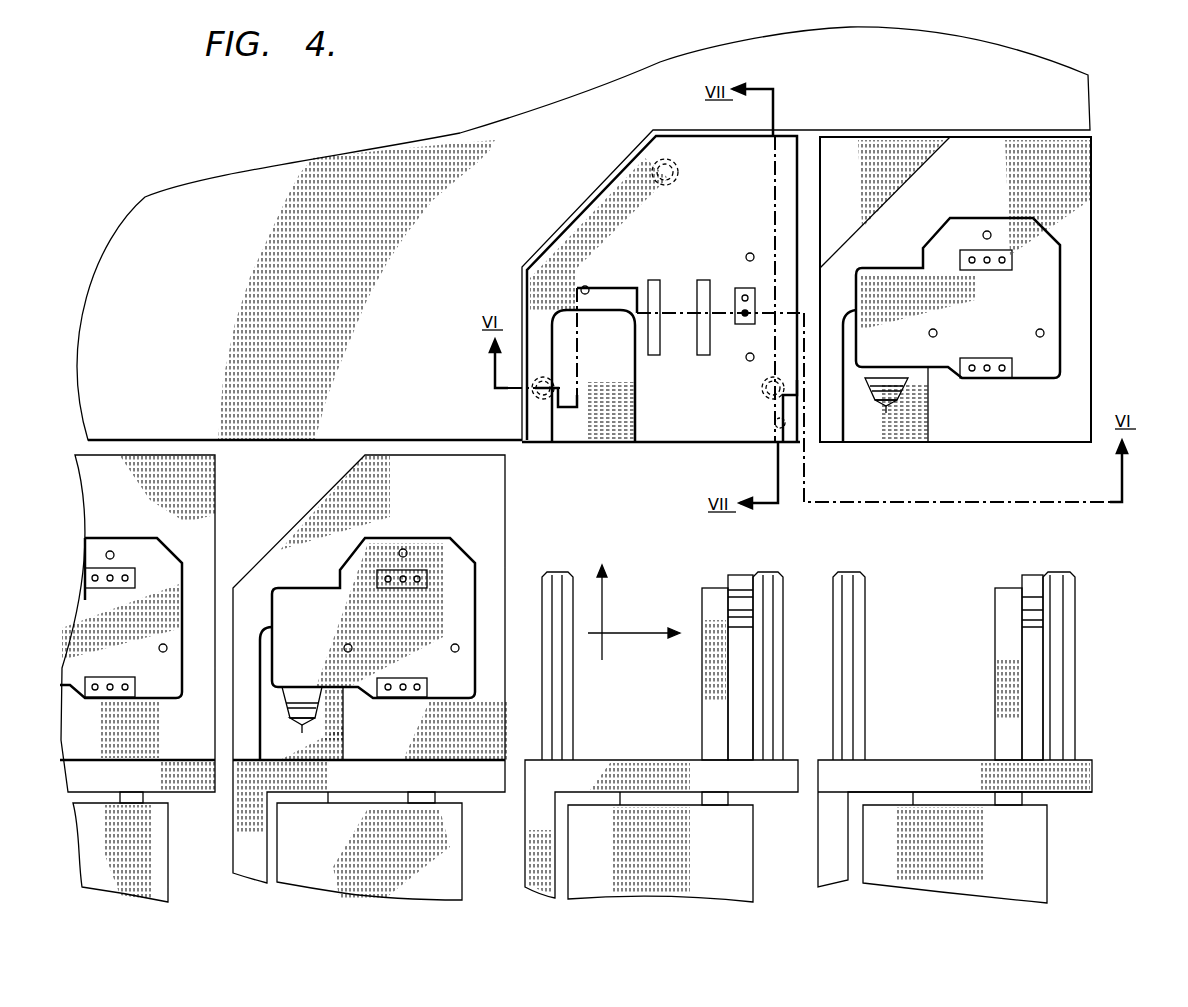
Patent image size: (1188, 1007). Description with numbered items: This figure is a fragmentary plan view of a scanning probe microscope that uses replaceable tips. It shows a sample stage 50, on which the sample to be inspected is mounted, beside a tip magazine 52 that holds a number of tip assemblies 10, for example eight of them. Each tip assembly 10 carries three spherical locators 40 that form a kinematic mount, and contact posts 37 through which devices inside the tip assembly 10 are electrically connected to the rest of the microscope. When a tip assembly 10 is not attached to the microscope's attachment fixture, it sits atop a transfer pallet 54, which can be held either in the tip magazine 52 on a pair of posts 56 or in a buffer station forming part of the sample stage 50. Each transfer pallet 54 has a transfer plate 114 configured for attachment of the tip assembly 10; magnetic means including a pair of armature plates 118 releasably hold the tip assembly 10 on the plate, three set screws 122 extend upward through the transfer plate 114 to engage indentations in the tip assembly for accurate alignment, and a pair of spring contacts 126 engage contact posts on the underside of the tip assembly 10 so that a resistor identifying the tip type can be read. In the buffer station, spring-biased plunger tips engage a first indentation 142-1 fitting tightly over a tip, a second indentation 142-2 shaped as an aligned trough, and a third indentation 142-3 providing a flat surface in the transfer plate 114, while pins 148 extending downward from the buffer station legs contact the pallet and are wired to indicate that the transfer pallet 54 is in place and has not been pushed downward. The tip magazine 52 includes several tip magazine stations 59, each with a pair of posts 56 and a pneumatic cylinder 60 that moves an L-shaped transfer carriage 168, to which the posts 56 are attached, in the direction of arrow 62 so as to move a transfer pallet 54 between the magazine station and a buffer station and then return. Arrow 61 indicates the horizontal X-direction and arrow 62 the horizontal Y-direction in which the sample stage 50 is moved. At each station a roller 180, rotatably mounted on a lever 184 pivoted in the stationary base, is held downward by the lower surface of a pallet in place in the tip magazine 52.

The sample stage 50 is at (218, 138).
The transfer plate 114 is at (575, 220).
The pins 148 is at (560, 410).
The first indentation 142-1 is at (545, 400).
The second indentation 142-2 is at (763, 397).
The third indentation 142-3 is at (652, 162).
The armature plates 118 is at (655, 355).
The set screws 122 is at (588, 287).
The spring contacts 126 is at (745, 295).
The transfer pallet 54 is at (938, 459).
The tip assembly 10 is at (1033, 394).
The contact posts 37 is at (1003, 380).
The spherical locators 40 is at (986, 230).
The tip magazine 52 is at (1103, 638).
The pneumatic cylinder 60 is at (1050, 844).
The arrow 62 is at (604, 600).
The arrow 61 is at (623, 635).
The posts 56 is at (867, 682).
The lever 184 is at (993, 600).
The roller 180 is at (1032, 572).
The tip magazine station 59 is at (950, 641).
The transfer carriage 168 is at (905, 758).